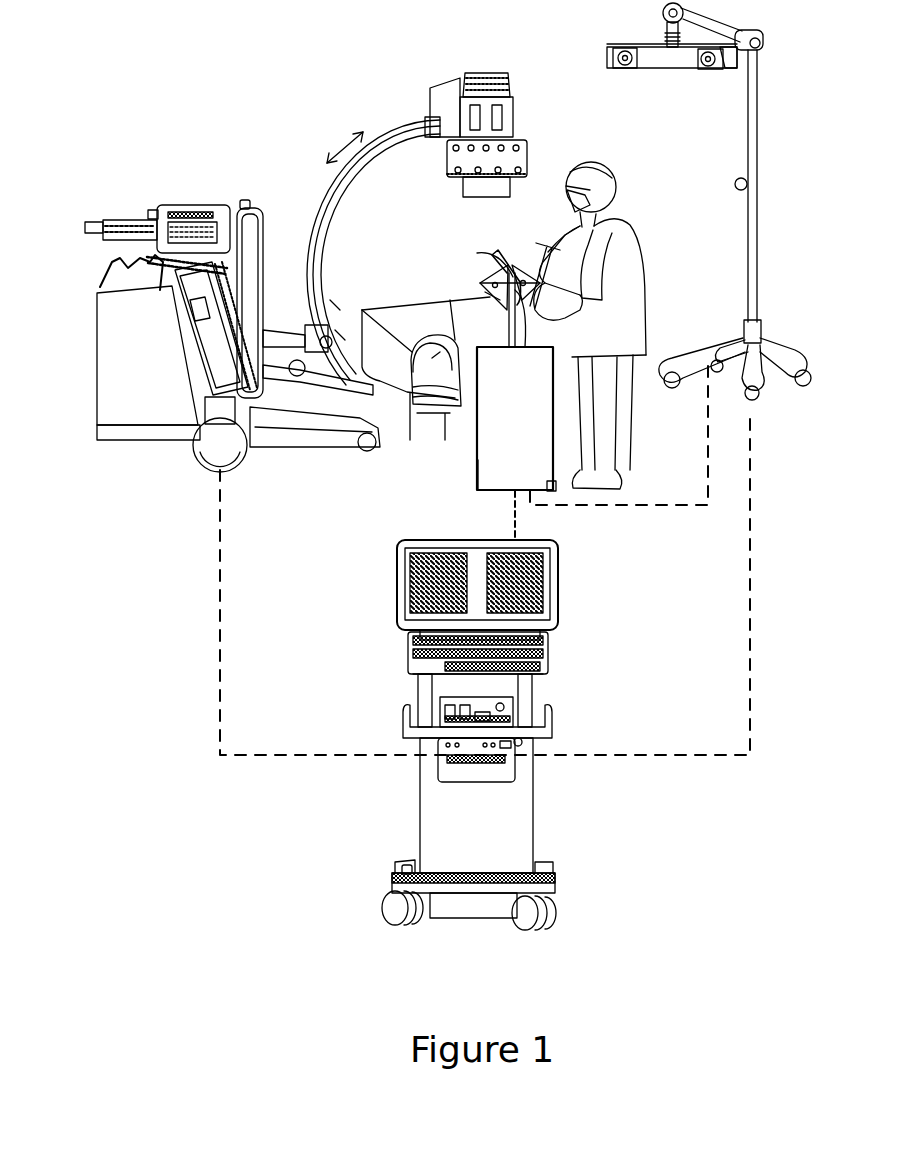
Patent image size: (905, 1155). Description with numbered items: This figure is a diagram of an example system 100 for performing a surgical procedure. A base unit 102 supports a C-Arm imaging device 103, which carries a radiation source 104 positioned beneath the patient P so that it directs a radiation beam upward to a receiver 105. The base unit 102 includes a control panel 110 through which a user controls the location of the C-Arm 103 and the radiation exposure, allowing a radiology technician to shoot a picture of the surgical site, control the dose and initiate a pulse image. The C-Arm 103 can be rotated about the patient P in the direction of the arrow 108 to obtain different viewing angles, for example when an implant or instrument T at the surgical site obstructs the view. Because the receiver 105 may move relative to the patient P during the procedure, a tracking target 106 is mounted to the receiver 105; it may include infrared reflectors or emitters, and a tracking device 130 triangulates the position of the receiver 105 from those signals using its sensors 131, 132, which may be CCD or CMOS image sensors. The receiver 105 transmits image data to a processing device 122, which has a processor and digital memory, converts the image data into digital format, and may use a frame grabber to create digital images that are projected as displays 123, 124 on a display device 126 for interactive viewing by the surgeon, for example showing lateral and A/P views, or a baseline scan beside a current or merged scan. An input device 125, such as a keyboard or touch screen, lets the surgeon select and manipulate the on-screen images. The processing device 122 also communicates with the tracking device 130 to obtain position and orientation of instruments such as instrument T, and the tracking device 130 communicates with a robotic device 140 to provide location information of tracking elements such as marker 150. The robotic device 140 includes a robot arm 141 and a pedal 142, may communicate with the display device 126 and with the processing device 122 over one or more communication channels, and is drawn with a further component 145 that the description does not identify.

The system 100 is at (303, 69).
The base unit 102 is at (93, 390).
The C-Arm imaging device 103 is at (313, 217).
The radiation source 104 is at (448, 413).
The receiver 105 is at (513, 113).
The tracking target 106 is at (530, 153).
The arrow 108 is at (335, 145).
The control panel 110 is at (187, 210).
The processing device 122 is at (540, 687).
The display 123 is at (422, 573).
The display 124 is at (530, 580).
The input device 125 is at (407, 643).
The display device 126 is at (547, 545).
The tracking device 130 is at (610, 44).
The sensor 131 is at (629, 67).
The sensor 132 is at (705, 68).
The robotic device 140 is at (497, 493).
The robot arm 141 is at (508, 340).
The pedal 142 is at (555, 480).
The housing connection 145 is at (485, 467).
The marker 150 is at (482, 287).
The patient P is at (434, 398).
The instrument T is at (463, 250).